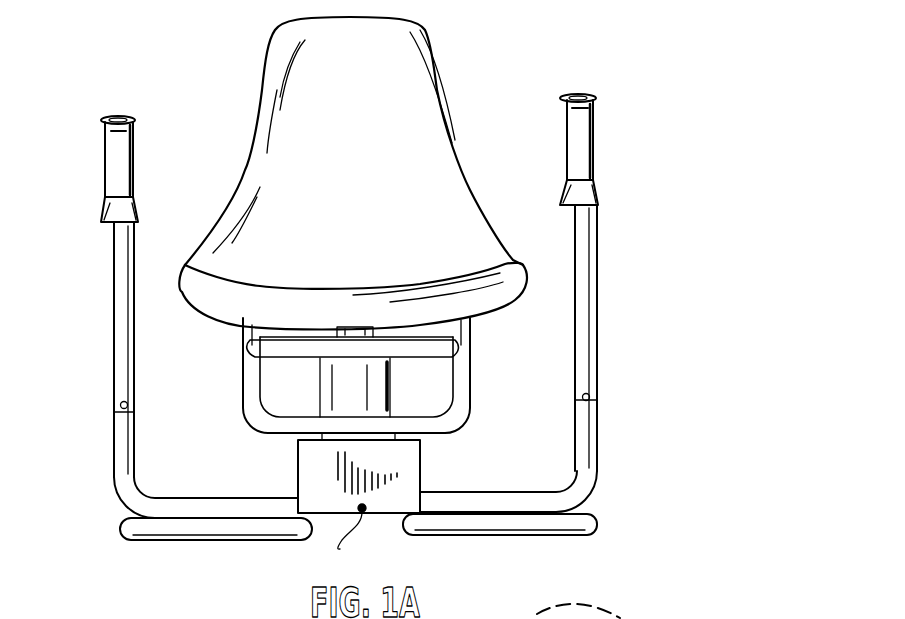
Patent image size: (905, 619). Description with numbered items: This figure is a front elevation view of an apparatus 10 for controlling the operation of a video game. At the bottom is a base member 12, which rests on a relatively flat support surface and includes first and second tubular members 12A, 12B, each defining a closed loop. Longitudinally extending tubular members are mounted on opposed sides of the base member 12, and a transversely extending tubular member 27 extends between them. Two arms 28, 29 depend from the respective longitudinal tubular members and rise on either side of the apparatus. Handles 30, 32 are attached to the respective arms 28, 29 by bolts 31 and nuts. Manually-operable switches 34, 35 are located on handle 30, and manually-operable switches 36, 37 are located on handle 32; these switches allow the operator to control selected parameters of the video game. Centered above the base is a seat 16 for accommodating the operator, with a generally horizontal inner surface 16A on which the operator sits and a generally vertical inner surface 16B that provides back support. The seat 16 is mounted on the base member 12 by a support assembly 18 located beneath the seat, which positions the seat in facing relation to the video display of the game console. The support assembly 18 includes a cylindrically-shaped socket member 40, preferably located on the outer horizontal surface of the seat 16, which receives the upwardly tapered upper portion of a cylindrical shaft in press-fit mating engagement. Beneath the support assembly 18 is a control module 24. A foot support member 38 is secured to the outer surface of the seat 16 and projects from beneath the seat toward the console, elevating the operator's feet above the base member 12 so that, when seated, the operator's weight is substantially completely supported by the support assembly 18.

The apparatus 10 is at (219, 56).
The base member 12 is at (361, 519).
The first tubular member 12A is at (163, 533).
The second tubular member 12B is at (590, 516).
The seat 16 is at (473, 89).
The generally horizontal inner surface 16A is at (263, 228).
The generally vertical inner surface 16B is at (440, 62).
The support assembly 18 is at (392, 385).
The control module 24 is at (420, 460).
The transversely extending tubular member 27 is at (230, 498).
The arm 28 is at (120, 452).
The arm 29 is at (590, 445).
The handle 30 is at (118, 257).
The bolt 31 is at (120, 405).
The handle 32 is at (580, 243).
The manually-operable switch 34 is at (118, 118).
The manually-operable switch 35 is at (134, 157).
The manually-operable switch 36 is at (579, 96).
The manually-operable switch 37 is at (566, 141).
The foot support member 38 is at (394, 364).
The socket member 40 is at (333, 330).